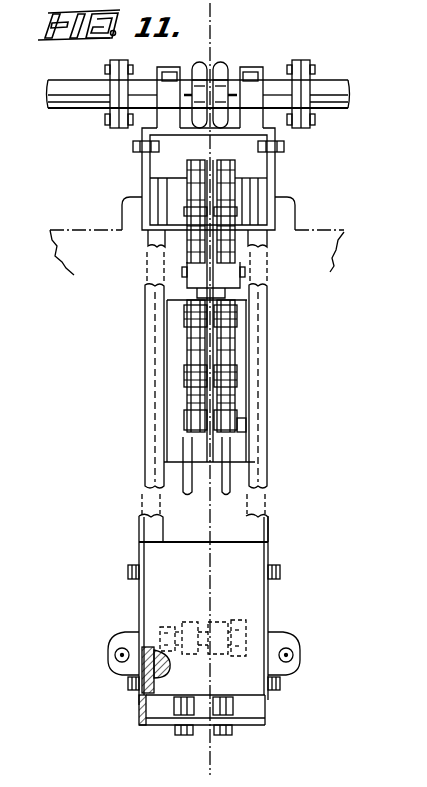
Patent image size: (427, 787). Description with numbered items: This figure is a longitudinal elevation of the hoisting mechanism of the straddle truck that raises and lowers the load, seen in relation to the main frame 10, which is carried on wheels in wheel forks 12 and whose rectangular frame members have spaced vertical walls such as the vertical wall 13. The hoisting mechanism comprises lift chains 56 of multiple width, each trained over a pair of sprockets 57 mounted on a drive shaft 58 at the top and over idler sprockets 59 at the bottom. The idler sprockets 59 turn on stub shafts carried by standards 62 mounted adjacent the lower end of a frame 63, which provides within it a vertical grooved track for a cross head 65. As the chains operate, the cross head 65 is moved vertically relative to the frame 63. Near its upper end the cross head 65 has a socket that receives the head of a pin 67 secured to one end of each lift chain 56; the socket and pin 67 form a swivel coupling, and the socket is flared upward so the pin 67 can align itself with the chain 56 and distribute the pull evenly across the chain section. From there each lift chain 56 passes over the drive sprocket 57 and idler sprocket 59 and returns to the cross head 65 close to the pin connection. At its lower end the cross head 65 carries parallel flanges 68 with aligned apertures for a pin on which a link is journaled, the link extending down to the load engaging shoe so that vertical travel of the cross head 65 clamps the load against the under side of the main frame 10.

The main frame 10 is at (346, 233).
The wheel forks 12 is at (212, 18).
The vertical wall 13 is at (426, 337).
The lift chains 56 is at (185, 373).
The sprockets 57 is at (221, 61).
The drive shafts 58 is at (278, 80).
The idler sprockets 59 is at (217, 628).
The standards 62 is at (166, 618).
The frame 63 is at (262, 552).
The cross head 65 is at (170, 417).
The pin 67 is at (226, 292).
The parallel flanges 68 is at (190, 497).